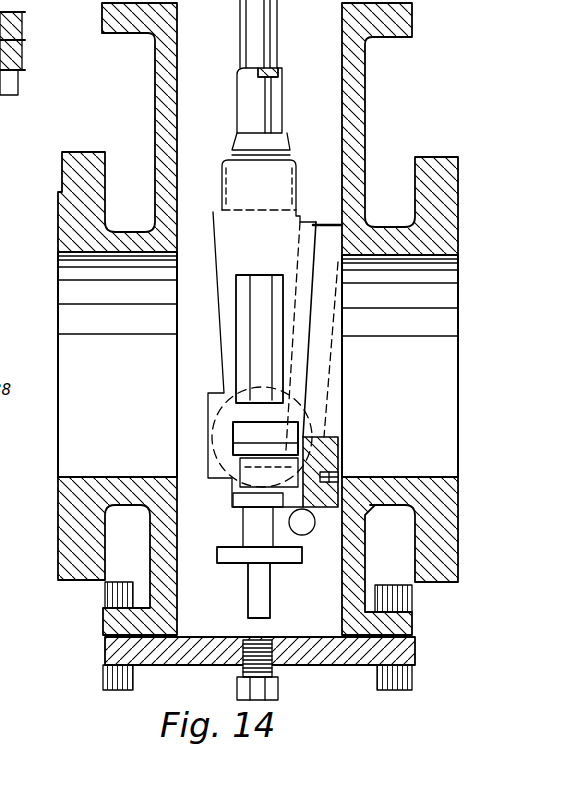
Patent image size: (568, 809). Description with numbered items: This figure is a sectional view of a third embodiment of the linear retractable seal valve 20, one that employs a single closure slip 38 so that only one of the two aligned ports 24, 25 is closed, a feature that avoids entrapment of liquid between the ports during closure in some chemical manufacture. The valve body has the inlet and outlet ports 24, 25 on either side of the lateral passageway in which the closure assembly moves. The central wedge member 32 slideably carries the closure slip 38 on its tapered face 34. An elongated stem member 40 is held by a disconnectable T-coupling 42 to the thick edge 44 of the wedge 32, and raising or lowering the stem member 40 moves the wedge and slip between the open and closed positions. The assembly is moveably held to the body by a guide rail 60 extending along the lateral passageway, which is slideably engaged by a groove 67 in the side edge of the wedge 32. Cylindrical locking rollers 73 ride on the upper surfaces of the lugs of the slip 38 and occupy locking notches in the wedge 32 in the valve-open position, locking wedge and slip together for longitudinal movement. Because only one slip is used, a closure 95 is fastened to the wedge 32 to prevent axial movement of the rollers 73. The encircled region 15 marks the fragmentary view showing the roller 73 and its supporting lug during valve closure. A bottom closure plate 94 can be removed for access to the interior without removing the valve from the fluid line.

The fragmentary detail view indicator 15 is at (258, 373).
The linear retractable seal valve 20 is at (150, 95).
The inlet port 24 is at (78, 400).
The outlet port 25 is at (421, 427).
The wedge member 32 is at (232, 233).
The tapered face 34 is at (305, 360).
The closure slip 38 is at (333, 390).
The stem member 40 is at (268, 100).
The T-coupling 42 is at (235, 157).
The thick edge of the wedge 44 is at (255, 225).
The guide rail 60 is at (266, 602).
The groove 67 is at (253, 325).
The roller 73 is at (241, 433).
The bottom closure plate 94 is at (312, 668).
The closure 95 is at (222, 478).